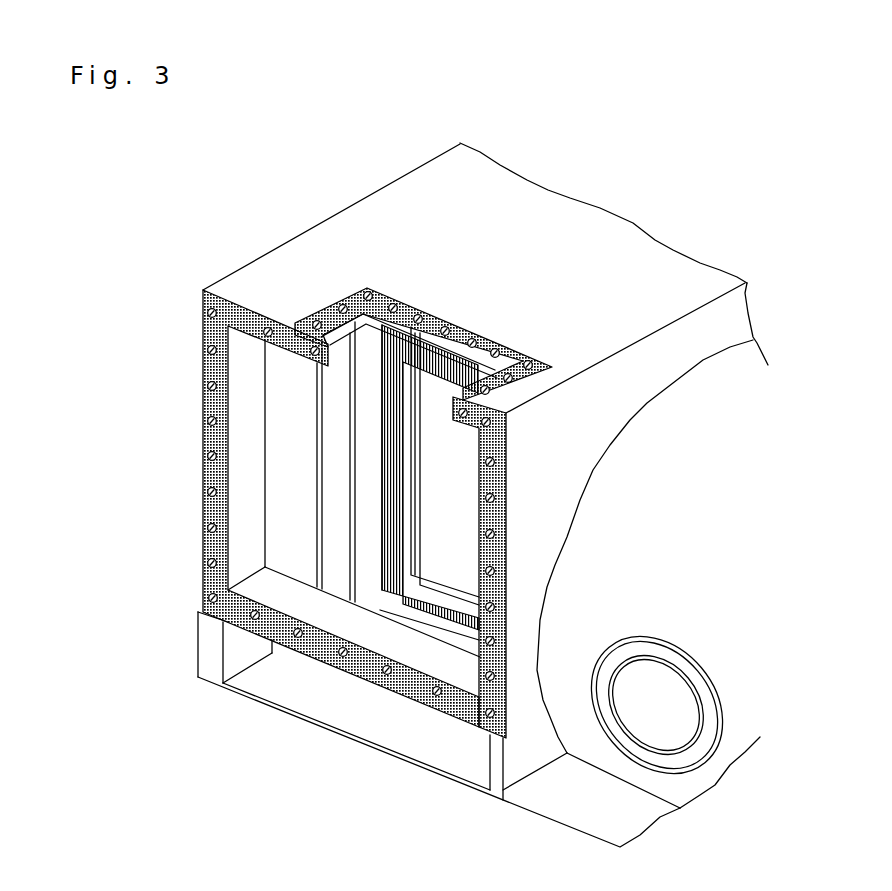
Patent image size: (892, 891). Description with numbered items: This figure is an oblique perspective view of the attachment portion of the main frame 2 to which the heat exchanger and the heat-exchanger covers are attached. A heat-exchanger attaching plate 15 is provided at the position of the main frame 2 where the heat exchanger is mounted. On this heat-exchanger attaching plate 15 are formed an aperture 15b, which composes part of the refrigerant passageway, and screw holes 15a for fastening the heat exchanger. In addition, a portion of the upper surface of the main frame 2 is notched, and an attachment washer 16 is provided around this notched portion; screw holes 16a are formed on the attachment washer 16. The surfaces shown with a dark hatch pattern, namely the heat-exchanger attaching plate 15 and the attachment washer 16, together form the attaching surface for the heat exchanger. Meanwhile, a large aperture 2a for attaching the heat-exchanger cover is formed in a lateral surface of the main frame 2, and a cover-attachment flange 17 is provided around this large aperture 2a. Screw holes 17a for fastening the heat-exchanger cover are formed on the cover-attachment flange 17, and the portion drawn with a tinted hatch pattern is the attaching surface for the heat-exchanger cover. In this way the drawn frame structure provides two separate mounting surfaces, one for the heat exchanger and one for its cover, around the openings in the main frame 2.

The main frame 2 is at (483, 466).
The large aperture 2a is at (308, 489).
The heat-exchanger attaching plate 15 is at (442, 559).
The screw holes 15a is at (381, 477).
The aperture 15b is at (553, 567).
The attachment washer 16 is at (404, 269).
The screw holes 16a is at (252, 253).
The cover-attachment flange 17 is at (303, 508).
The screw holes 17a is at (169, 440).